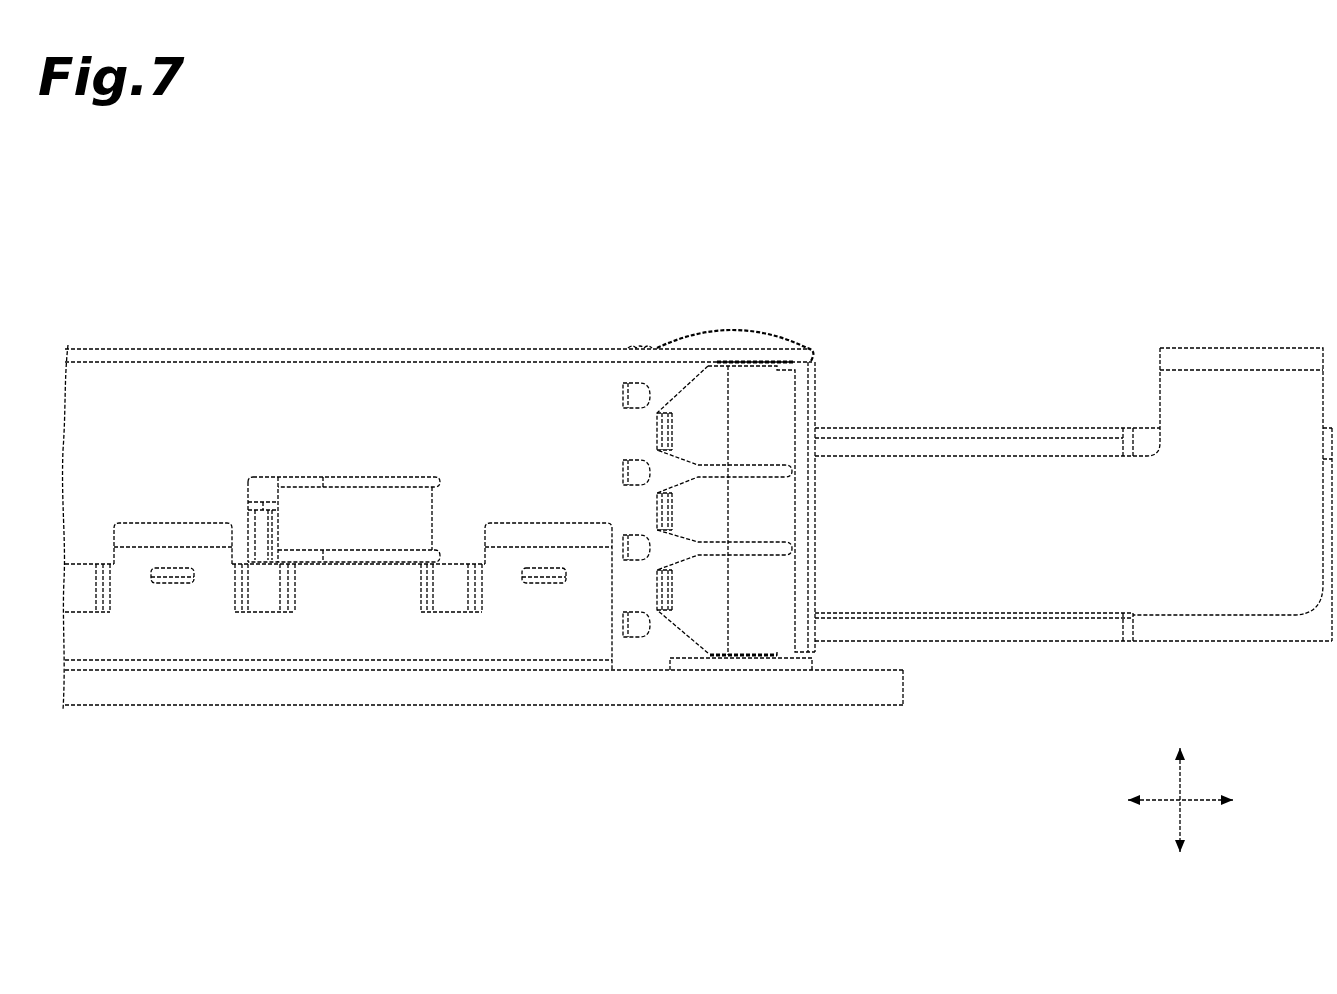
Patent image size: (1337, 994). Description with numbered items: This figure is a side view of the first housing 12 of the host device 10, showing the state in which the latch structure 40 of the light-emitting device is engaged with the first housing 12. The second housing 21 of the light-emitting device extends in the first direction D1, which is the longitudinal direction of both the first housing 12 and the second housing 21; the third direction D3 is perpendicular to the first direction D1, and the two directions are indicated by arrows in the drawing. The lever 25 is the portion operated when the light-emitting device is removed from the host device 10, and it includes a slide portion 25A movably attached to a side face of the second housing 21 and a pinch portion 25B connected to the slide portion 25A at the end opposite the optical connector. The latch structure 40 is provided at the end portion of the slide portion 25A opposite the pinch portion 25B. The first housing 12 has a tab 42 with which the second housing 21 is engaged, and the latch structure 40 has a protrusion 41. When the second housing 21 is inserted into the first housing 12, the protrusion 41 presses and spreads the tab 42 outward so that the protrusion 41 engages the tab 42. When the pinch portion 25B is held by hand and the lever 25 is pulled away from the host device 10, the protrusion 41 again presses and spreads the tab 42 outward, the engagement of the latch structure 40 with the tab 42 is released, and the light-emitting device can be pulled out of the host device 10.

The host device 10 is at (525, 284).
The first housing 12 is at (345, 351).
The second housing 21 is at (988, 429).
The lever 25 is at (1280, 349).
The slide portion 25A is at (995, 558).
The pinch portion 25B is at (1211, 348).
The latch structure 40 is at (246, 640).
The protrusion 41 is at (262, 533).
The tab 42 is at (368, 518).
The first direction D1 is at (1200, 802).
The third direction D3 is at (1178, 827).